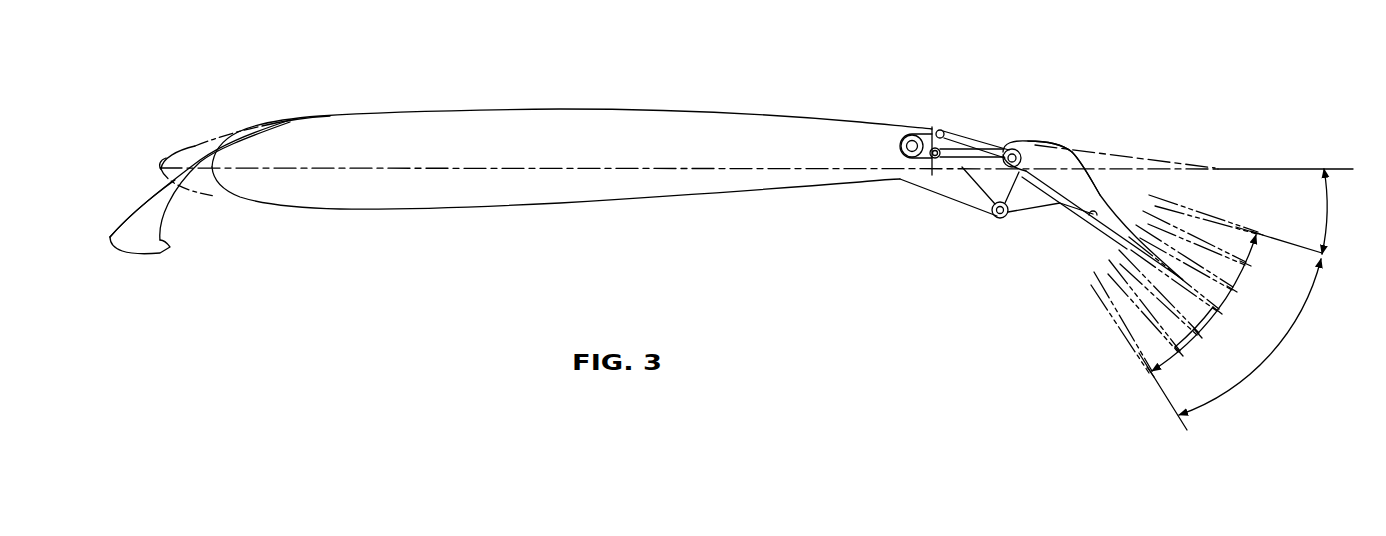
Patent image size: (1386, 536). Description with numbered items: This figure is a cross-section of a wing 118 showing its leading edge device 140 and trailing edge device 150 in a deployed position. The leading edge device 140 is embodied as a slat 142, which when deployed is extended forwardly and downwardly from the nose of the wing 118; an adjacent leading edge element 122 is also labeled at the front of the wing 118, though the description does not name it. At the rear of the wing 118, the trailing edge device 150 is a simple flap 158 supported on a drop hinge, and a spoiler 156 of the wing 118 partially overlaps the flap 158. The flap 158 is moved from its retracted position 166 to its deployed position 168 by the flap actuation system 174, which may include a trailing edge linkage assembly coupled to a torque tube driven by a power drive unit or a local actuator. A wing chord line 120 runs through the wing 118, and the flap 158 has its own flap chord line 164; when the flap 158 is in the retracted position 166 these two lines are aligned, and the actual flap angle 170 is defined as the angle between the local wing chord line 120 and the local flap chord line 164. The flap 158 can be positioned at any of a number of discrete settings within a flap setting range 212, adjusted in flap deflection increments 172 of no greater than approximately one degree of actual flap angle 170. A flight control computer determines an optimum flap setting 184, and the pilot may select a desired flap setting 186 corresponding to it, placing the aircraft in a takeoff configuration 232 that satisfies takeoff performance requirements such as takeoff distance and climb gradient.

The wing 118 is at (625, 52).
The wing chord line 120 is at (428, 166).
The leading edge slat 122 is at (172, 160).
The leading edge device 140 is at (140, 210).
The slat 142 is at (118, 224).
The trailing edge device 150 is at (1110, 207).
The spoiler 156 is at (996, 140).
The flap 158 is at (1062, 168).
The flap chord line 164 is at (1088, 222).
The retracted position 166 is at (1203, 166).
The deployed position 168 is at (1128, 214).
The actual flap angle 170 is at (1317, 209).
The flap deflection increments 172 is at (1156, 362).
The flap actuation system 174 is at (904, 132).
The optimum flap setting 184 is at (1053, 200).
The desired flap setting 186 is at (1065, 207).
The flap setting range 212 is at (1297, 313).
The takeoff configuration 232 is at (1132, 208).